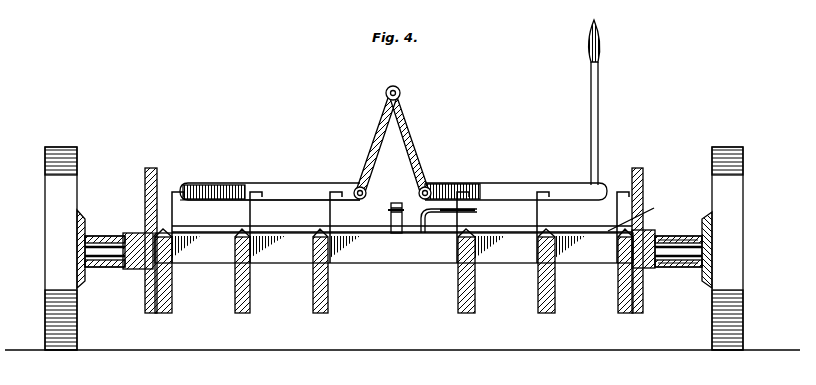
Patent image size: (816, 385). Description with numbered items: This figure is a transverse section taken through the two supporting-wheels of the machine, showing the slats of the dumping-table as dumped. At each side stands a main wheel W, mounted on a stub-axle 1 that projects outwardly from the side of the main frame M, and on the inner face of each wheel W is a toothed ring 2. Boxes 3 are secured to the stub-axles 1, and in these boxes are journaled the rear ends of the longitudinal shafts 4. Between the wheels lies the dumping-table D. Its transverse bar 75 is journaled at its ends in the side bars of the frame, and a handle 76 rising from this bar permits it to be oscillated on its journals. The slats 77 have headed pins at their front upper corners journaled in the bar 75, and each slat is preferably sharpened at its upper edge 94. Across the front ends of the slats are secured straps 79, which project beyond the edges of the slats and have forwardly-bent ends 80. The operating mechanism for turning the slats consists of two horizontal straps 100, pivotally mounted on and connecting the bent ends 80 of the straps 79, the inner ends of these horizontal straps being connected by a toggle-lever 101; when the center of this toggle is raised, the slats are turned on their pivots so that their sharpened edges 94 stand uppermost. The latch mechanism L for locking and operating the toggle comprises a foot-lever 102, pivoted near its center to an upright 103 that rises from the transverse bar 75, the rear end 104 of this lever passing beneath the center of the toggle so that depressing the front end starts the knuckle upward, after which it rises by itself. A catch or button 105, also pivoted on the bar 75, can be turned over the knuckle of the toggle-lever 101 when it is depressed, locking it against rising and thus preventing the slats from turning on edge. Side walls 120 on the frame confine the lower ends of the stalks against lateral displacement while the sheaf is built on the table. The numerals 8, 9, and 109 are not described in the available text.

The stub-axle 1 is at (107, 267).
The toothed ring 2 is at (80, 219).
The box 3 is at (674, 236).
The longitudinal shaft 4 is at (671, 199).
The frame bar 8 is at (636, 213).
The bar 9 is at (460, 168).
The transverse bar 75 is at (394, 244).
The handle 76 is at (599, 90).
The slat 77 is at (250, 294).
The strap 79 is at (250, 221).
The forwardly-bent end 80 is at (188, 190).
The sharpened upper edge 94 is at (251, 233).
The horizontal strap 100 is at (547, 187).
The toggle-lever 101 is at (392, 142).
The foot-lever 102 is at (400, 211).
The upright 103 is at (428, 214).
The rear end of foot-lever 104 is at (388, 210).
The catch or button 105 is at (475, 211).
The rod 109 is at (270, 184).
The side wall 120 is at (145, 182).
The main wheel W is at (56, 199).
The frame M is at (387, 260).
The dumping-table D is at (303, 216).
The latch mechanism L is at (384, 187).